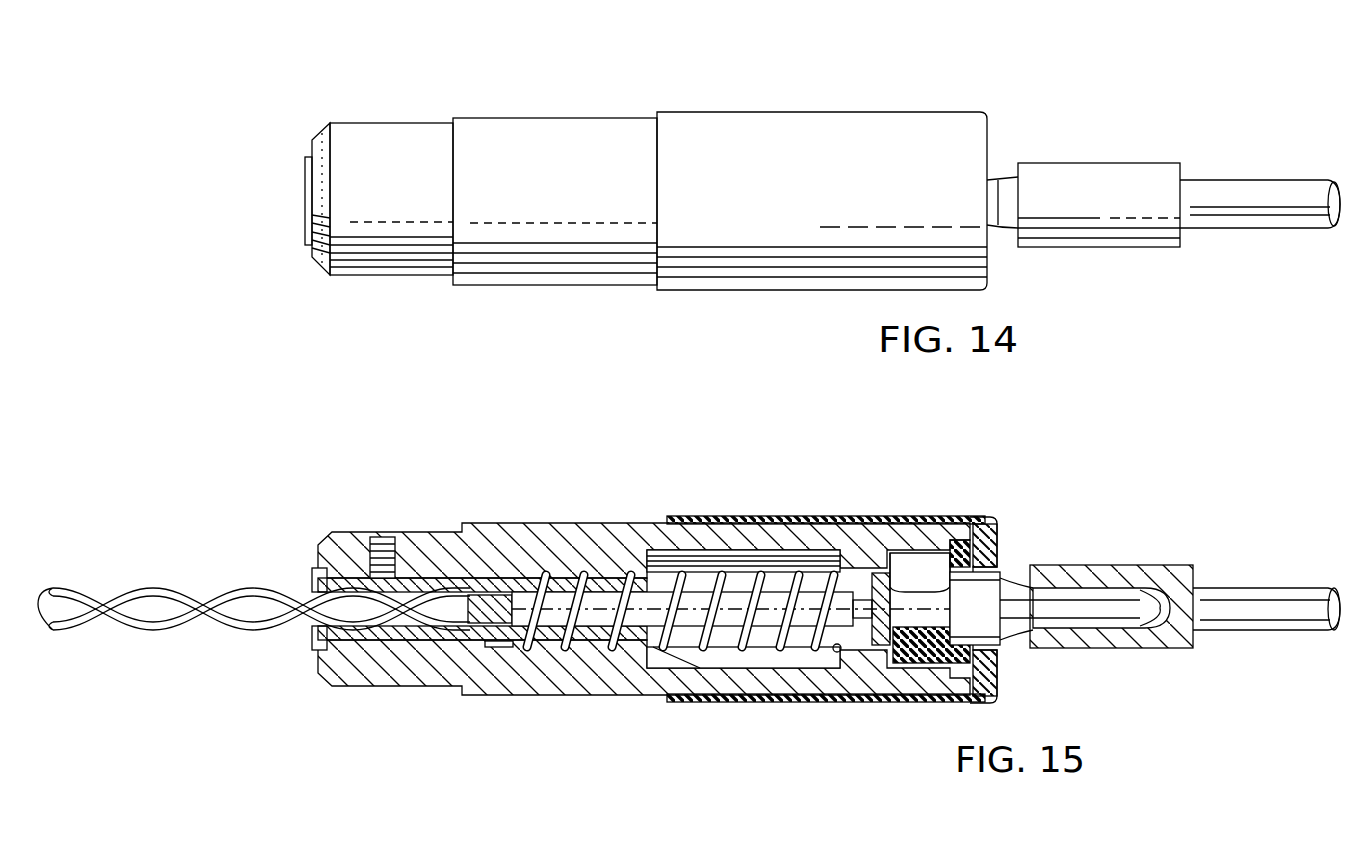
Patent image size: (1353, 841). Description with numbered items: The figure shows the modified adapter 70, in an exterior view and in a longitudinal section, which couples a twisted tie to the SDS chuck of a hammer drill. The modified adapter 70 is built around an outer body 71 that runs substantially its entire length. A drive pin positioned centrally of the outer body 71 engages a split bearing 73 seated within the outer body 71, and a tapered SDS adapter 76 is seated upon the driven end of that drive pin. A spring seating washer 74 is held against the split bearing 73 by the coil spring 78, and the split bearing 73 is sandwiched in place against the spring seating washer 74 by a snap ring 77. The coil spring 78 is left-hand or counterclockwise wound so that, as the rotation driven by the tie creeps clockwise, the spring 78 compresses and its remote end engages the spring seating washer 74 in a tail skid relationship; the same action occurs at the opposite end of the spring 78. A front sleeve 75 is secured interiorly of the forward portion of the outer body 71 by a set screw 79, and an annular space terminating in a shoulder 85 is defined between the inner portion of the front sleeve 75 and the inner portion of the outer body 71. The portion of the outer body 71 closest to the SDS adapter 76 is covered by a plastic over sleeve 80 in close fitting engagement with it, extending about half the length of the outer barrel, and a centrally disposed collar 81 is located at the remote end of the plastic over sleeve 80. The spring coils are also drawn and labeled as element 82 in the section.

In FIG. 14, the modified adapter 70 is at (822, 163).
In FIG. 15, the modified adapter 70 is at (689, 578).
In FIG. 14, the outer body 71 is at (577, 117).
In FIG. 15, the outer body 71 is at (583, 523).
In FIG. 15, the split bearing 73 is at (953, 545).
In FIG. 15, the spring seating washer 74 is at (922, 563).
In FIG. 15, the front sleeve 75 is at (425, 580).
In FIG. 14, the tapered SDS adapter 76 is at (1093, 163).
In FIG. 15, the tapered SDS adapter 76 is at (1140, 566).
In FIG. 15, the snap ring 77 is at (1000, 587).
In FIG. 15, the coil spring 78 is at (700, 655).
In FIG. 15, the set screw 79 is at (380, 535).
In FIG. 14, the plastic over sleeve 80 is at (897, 199).
In FIG. 15, the plastic over sleeve 80 is at (700, 516).
In FIG. 15, the collar 81 is at (1000, 660).
In FIG. 15, the spring 82 is at (700, 575).
In FIG. 15, the shoulder 85 is at (490, 648).